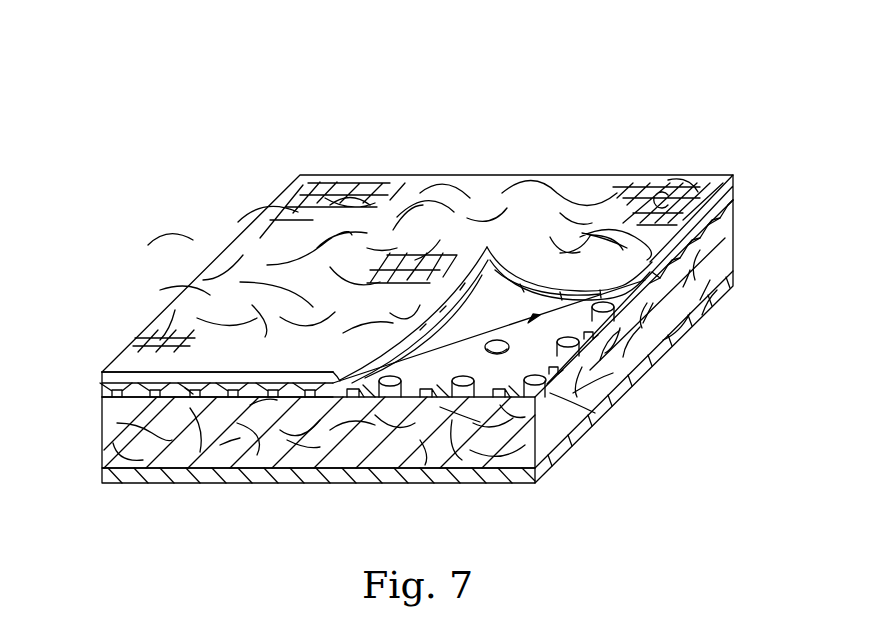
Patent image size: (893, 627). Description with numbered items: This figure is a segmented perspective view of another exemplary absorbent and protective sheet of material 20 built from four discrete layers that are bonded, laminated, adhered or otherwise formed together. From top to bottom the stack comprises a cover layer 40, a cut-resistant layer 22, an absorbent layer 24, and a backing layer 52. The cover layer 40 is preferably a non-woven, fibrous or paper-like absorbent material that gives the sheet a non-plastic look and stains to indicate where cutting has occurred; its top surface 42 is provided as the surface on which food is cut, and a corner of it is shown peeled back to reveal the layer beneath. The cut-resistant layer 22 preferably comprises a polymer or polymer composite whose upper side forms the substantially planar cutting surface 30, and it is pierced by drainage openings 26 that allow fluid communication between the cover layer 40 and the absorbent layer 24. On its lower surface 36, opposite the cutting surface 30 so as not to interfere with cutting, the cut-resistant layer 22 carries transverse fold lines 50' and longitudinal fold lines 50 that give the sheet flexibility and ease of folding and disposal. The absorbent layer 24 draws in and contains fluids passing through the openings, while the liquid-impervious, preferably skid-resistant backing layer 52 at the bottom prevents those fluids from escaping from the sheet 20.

The absorbent and protective sheet of material 20 is at (763, 118).
The cut-resistant layer 22 is at (105, 384).
The absorbent layer 24 is at (725, 238).
The drainage openings 26 is at (533, 378).
The cutting surface 30 is at (716, 188).
The lower surface of the cut-resistant layer 36 is at (505, 341).
The cover layer 40 is at (523, 274).
The top surface of the cover layer 42 is at (296, 210).
The longitudinal fold lines 50 is at (219, 464).
The transverse fold lines 50' is at (672, 331).
The backing layer 52 is at (470, 483).